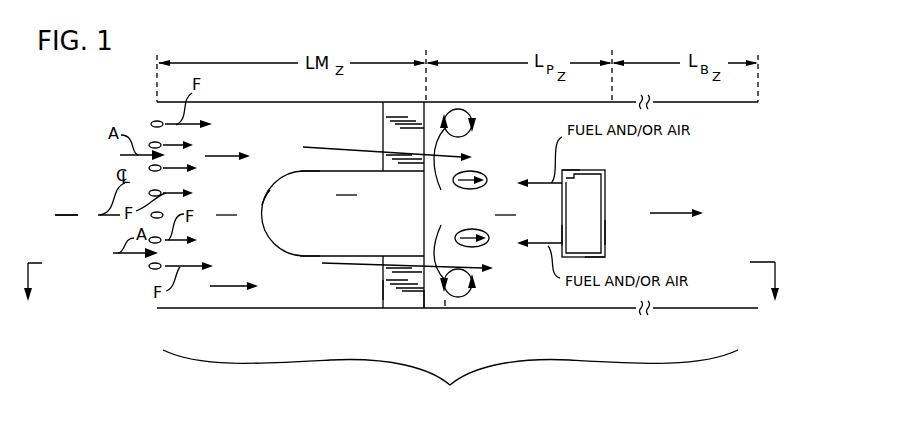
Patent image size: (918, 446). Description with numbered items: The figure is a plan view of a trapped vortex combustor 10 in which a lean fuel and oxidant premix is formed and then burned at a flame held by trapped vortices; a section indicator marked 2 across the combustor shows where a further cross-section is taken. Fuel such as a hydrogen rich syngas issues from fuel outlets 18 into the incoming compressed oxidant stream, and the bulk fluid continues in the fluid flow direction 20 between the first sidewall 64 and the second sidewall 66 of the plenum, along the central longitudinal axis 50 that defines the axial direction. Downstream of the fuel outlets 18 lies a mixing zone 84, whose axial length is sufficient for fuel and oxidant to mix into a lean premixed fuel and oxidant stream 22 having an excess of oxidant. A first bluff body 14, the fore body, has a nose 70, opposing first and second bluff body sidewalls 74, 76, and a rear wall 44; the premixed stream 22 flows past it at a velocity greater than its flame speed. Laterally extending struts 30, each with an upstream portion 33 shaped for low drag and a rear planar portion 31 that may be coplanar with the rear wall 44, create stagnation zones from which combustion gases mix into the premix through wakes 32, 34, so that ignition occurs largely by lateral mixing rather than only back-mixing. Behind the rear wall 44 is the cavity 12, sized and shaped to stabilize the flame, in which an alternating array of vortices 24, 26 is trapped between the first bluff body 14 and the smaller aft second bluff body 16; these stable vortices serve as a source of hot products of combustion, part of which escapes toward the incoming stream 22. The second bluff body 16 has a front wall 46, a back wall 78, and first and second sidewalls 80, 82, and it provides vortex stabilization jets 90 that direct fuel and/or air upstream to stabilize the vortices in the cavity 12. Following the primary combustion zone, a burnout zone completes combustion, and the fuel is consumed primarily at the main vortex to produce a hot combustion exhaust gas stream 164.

The trapped vortex combustor 10 is at (450, 379).
The cavity 12 is at (505, 206).
The first bluff body 14 is at (343, 205).
The second bluff body 16 is at (604, 200).
The fuel outlets 18 is at (151, 123).
The fluid flow direction 20 is at (205, 156).
The lean premixed fuel and oxidant stream 22 is at (332, 148).
The vortex 24 is at (488, 168).
The vortex 26 is at (492, 250).
The struts 30 is at (410, 110).
The rear planar portion 31 is at (430, 300).
The wake 32 is at (447, 300).
The upstream portion 33 is at (378, 292).
The wake 34 is at (470, 108).
The rear wall 44 is at (428, 228).
The front wall 46 is at (562, 238).
The central longitudinal axis 50 is at (92, 216).
The first sidewall 64 is at (237, 102).
The second sidewall 66 is at (512, 308).
The nose 70 is at (265, 195).
The first bluff body sidewall 74 is at (300, 170).
The second bluff body sidewall 76 is at (312, 257).
The back wall 78 is at (606, 235).
The first sidewall 80 is at (578, 171).
The second sidewall 82 is at (597, 258).
The mixing zone 84 is at (226, 206).
The vortex stabilization jets 90 is at (553, 183).
The hot combustion exhaust gas stream 164 is at (668, 212).
The section line 2- 2 is at (401, 293).